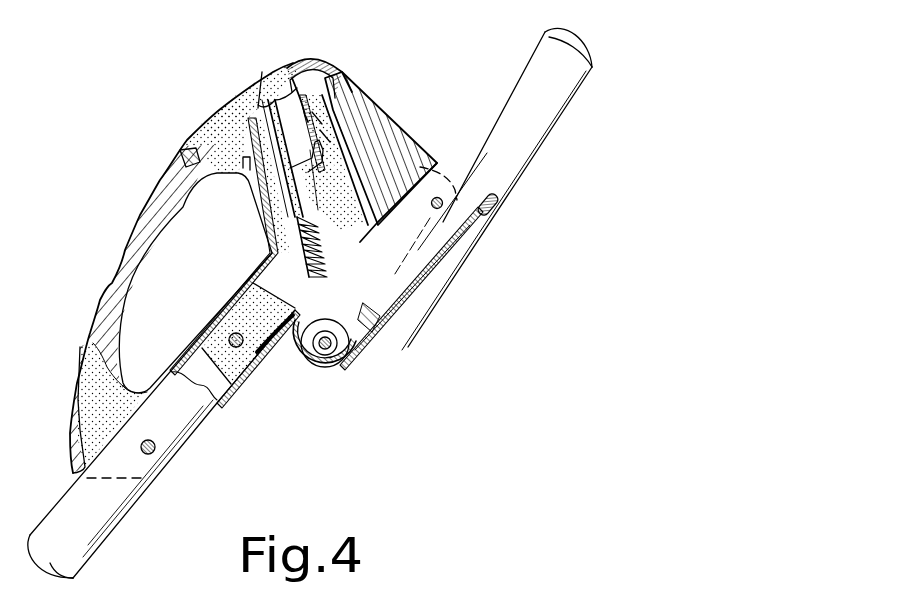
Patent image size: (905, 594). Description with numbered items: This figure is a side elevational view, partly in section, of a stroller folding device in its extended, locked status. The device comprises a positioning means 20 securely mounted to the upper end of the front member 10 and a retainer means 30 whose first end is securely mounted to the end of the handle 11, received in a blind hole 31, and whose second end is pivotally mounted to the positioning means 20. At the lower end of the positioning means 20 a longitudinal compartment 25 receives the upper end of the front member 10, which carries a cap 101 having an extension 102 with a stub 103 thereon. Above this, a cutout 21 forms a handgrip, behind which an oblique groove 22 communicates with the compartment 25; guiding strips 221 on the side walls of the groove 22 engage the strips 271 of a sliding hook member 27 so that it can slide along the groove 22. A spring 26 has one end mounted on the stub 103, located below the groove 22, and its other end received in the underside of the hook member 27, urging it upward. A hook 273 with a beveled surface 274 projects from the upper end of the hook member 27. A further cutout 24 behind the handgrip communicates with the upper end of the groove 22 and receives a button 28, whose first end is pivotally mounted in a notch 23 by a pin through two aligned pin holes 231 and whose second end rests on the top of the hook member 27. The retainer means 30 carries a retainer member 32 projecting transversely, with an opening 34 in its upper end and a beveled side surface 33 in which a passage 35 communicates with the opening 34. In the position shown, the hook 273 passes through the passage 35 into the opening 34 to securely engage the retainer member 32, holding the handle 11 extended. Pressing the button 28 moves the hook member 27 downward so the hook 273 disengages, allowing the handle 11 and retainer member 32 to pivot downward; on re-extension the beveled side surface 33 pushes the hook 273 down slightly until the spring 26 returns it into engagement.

The front member 10 is at (117, 520).
The handle 11 is at (530, 132).
The positioning means 20 is at (112, 272).
The cutout 21 is at (157, 262).
The oblique groove 22 is at (262, 72).
The guiding strips 221 is at (308, 65).
The notch 23 is at (228, 157).
The pin holes 231 is at (183, 157).
The cutout 24 is at (312, 100).
The longitudinal compartment 25 is at (286, 335).
The spring 26 is at (353, 240).
The sliding hook member 27 is at (228, 110).
The strips 271 is at (262, 100).
The hook 273 is at (312, 112).
The beveled surface 274 is at (320, 130).
The button 28 is at (213, 120).
The retainer means 30 is at (377, 342).
The blind hole 31 is at (496, 206).
The retainer member 32 is at (403, 155).
The beveled side surface 33 is at (307, 198).
The opening 34 is at (302, 126).
The passage 35 is at (260, 186).
The cap 101 is at (270, 370).
The extension 102 is at (363, 312).
The stub 103 is at (350, 283).